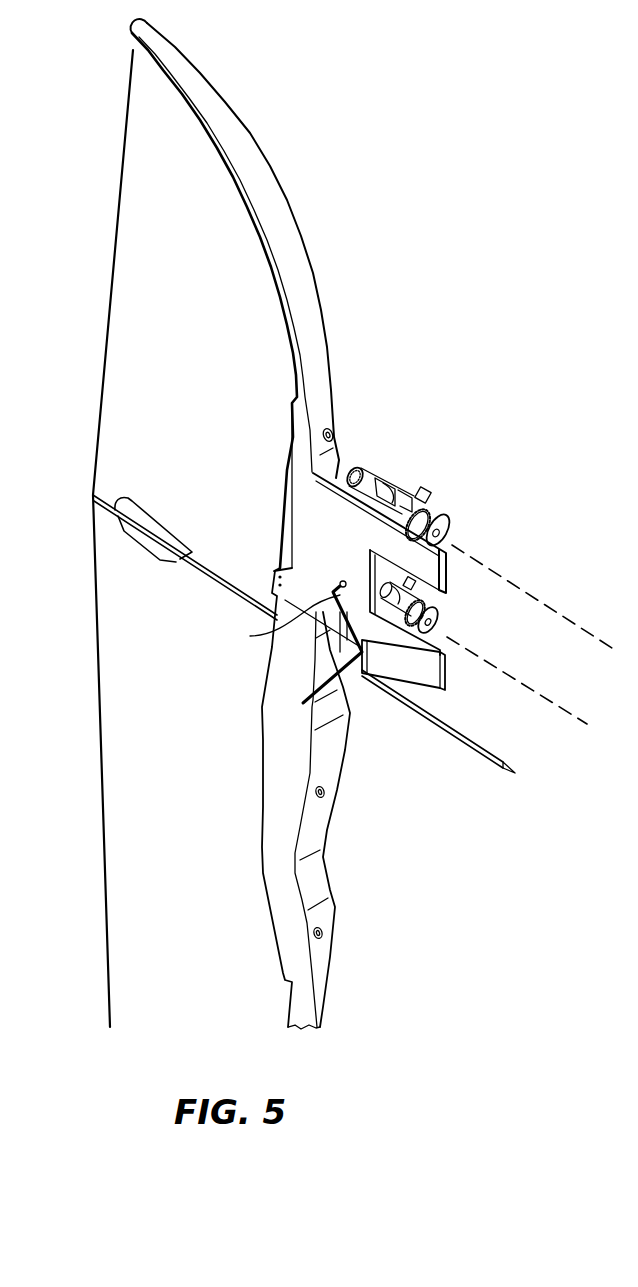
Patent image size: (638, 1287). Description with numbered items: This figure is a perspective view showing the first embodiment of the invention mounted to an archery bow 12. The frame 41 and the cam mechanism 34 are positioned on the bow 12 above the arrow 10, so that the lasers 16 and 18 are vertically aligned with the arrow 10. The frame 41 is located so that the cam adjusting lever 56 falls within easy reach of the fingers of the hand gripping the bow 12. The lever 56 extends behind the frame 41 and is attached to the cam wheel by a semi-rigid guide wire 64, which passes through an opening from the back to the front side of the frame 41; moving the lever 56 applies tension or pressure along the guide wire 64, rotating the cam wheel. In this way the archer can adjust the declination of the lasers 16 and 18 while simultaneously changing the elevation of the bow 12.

The arrow 10 is at (423, 715).
The bow 12 is at (288, 263).
The laser 16 is at (445, 542).
The laser 18 is at (443, 625).
The cam mechanism 34 is at (498, 552).
The frame 41 is at (447, 670).
The lever 56 is at (278, 622).
The guide wire 64 is at (345, 578).